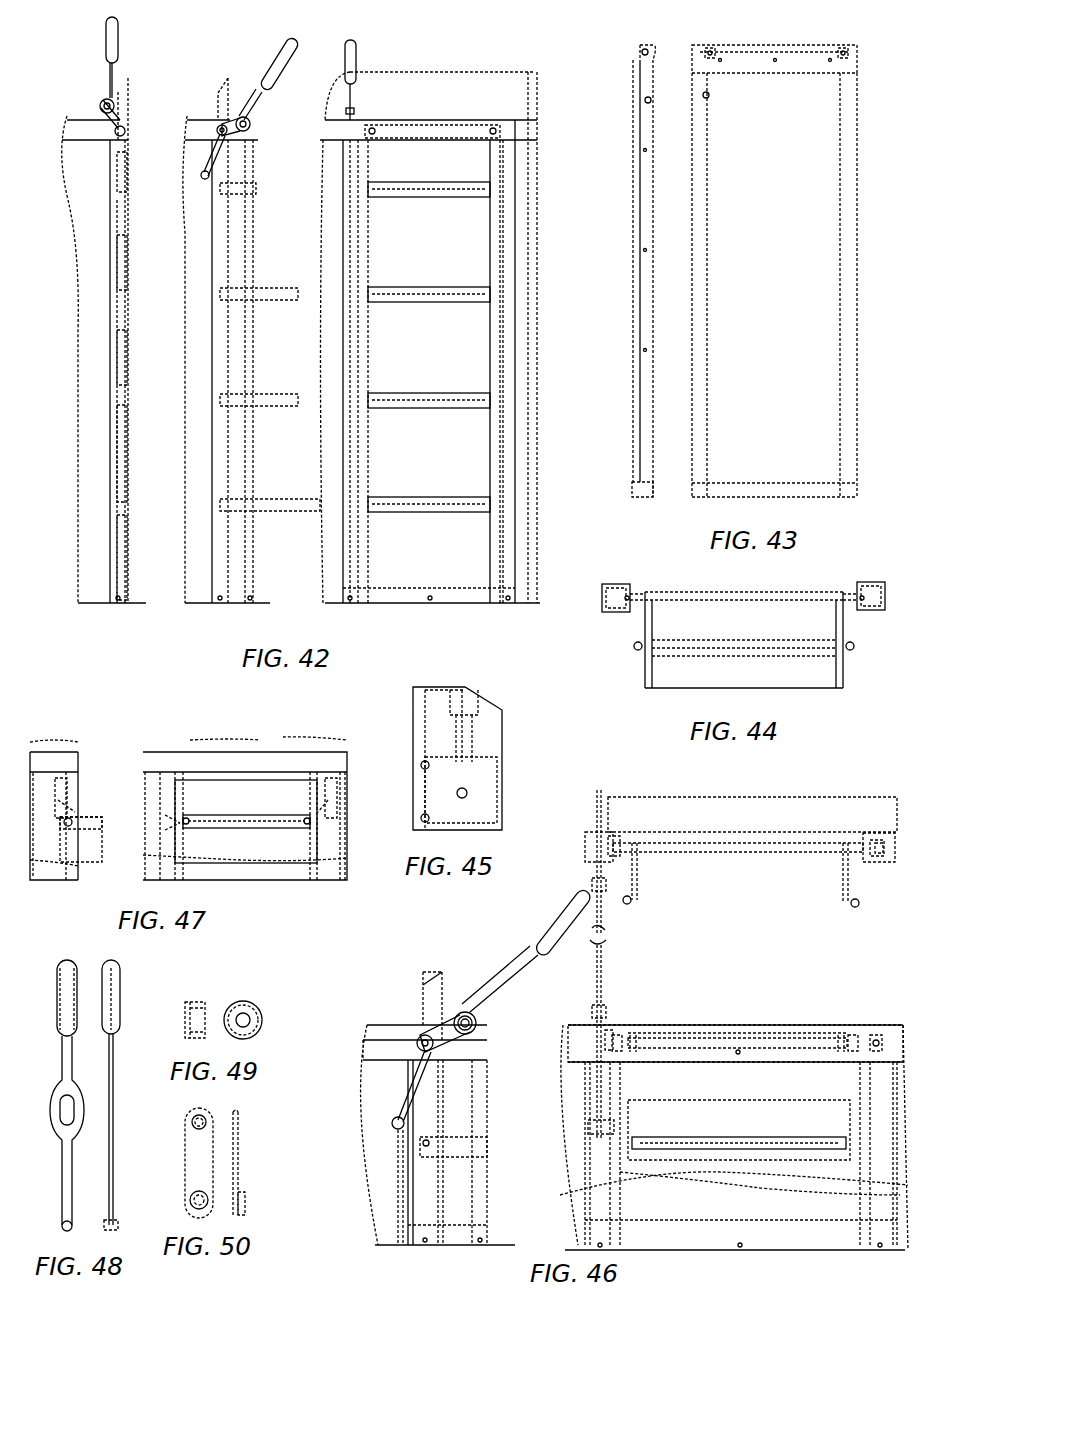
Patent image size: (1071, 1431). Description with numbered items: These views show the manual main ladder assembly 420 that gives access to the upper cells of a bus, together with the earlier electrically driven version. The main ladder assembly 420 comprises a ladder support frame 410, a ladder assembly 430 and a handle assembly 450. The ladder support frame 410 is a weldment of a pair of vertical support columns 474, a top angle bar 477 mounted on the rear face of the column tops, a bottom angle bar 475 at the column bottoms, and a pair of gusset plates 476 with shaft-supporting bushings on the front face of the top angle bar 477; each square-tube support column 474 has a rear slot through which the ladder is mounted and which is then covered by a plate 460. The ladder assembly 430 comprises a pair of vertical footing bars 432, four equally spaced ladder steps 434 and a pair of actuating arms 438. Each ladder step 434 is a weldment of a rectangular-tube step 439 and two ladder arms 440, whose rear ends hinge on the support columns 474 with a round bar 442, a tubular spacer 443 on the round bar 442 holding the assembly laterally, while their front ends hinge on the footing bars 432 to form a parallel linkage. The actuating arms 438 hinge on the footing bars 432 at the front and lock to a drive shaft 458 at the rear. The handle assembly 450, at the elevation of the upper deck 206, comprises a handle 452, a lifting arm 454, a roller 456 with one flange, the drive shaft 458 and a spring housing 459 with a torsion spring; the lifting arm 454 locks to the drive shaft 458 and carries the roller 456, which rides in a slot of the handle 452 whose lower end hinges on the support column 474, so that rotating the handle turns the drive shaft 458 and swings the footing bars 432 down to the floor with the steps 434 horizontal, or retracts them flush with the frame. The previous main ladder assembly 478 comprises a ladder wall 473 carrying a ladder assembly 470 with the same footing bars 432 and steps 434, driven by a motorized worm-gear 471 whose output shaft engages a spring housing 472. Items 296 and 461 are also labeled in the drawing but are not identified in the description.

In FIG. 47, the upper deck 206 is at (65, 752).
In FIG. 46, the upper deck 206 is at (400, 1065).
In FIG. 42, the mounting tab 296 is at (127, 120).
In FIG. 43, the ladder support frame 410 is at (869, 180).
In FIG. 42, the main ladder assembly 420 is at (240, 622).
In FIG. 42, the ladder assembly 430 is at (277, 558).
In FIG. 42, the vertical footing bars 432 is at (118, 210).
In FIG. 44, the vertical footing bars 432 is at (637, 652).
In FIG. 47, the vertical footing bars 432 is at (102, 838).
In FIG. 46, the vertical footing bars 432 is at (632, 905).
In FIG. 42, the ladder steps 434 is at (114, 248).
In FIG. 44, the ladder steps 434 is at (852, 690).
In FIG. 47, the ladder steps 434 is at (248, 813).
In FIG. 46, the ladder steps 434 is at (832, 1140).
In FIG. 46, the actuating arms 438 is at (640, 875).
In FIG. 44, the step 439 is at (780, 690).
In FIG. 44, the ladder arms 440 is at (645, 620).
In FIG. 45, the ladder arms 440 is at (478, 700).
In FIG. 47, the ladder arms 440 is at (85, 817).
In FIG. 44, the round bar 442 is at (745, 592).
In FIG. 45, the round bar 442 is at (448, 690).
In FIG. 44, the tubular spacer 443 is at (645, 592).
In FIG. 45, the tubular spacer 443 is at (472, 742).
In FIG. 42, the handle assembly 450 is at (383, 60).
In FIG. 42, the handle 452 is at (108, 72).
In FIG. 46, the handle 452 is at (597, 870).
In FIG. 48, the handle 452 is at (112, 1118).
In FIG. 42, the lifting arm 454 is at (225, 122).
In FIG. 46, the lifting arm 454 is at (625, 845).
In FIG. 50, the lifting arm 454 is at (186, 1170).
In FIG. 46, the roller 456 is at (596, 888).
In FIG. 49, the roller 456 is at (198, 1002).
In FIG. 46, the drive shaft 458 is at (740, 852).
In FIG. 46, the spring housing 459 is at (882, 862).
In FIG. 42, the plate 460 is at (212, 240).
In FIG. 44, the plate 460 is at (620, 588).
In FIG. 45, the plate 460 is at (425, 800).
In FIG. 46, the plate 460 is at (405, 1190).
In FIG. 42, the connecting rod 461 is at (214, 165).
In FIG. 43, the connecting rod 461 is at (648, 100).
In FIG. 46, the connecting rod 461 is at (592, 1128).
In FIG. 47, the ladder assembly 470 is at (249, 840).
In FIG. 47, the motorized worm-gear 471 is at (55, 790).
In FIG. 47, the spring housing 472 is at (165, 760).
In FIG. 47, the ladder wall 473 is at (347, 830).
In FIG. 42, the vertical support columns 474 is at (232, 238).
In FIG. 43, the vertical support columns 474 is at (640, 332).
In FIG. 44, the vertical support columns 474 is at (602, 603).
In FIG. 45, the vertical support columns 474 is at (502, 790).
In FIG. 46, the vertical support columns 474 is at (590, 850).
In FIG. 43, the bottom angle bar 475 is at (644, 497).
In FIG. 45, the bottom angle bar 475 is at (413, 708).
In FIG. 46, the bottom angle bar 475 is at (408, 1238).
In FIG. 43, the gusset plates 476 is at (650, 50).
In FIG. 46, the gusset plates 476 is at (610, 840).
In FIG. 43, the top angle bar 477 is at (633, 45).
In FIG. 46, the top angle bar 477 is at (812, 797).
In FIG. 47, the main ladder assembly 478 is at (119, 890).